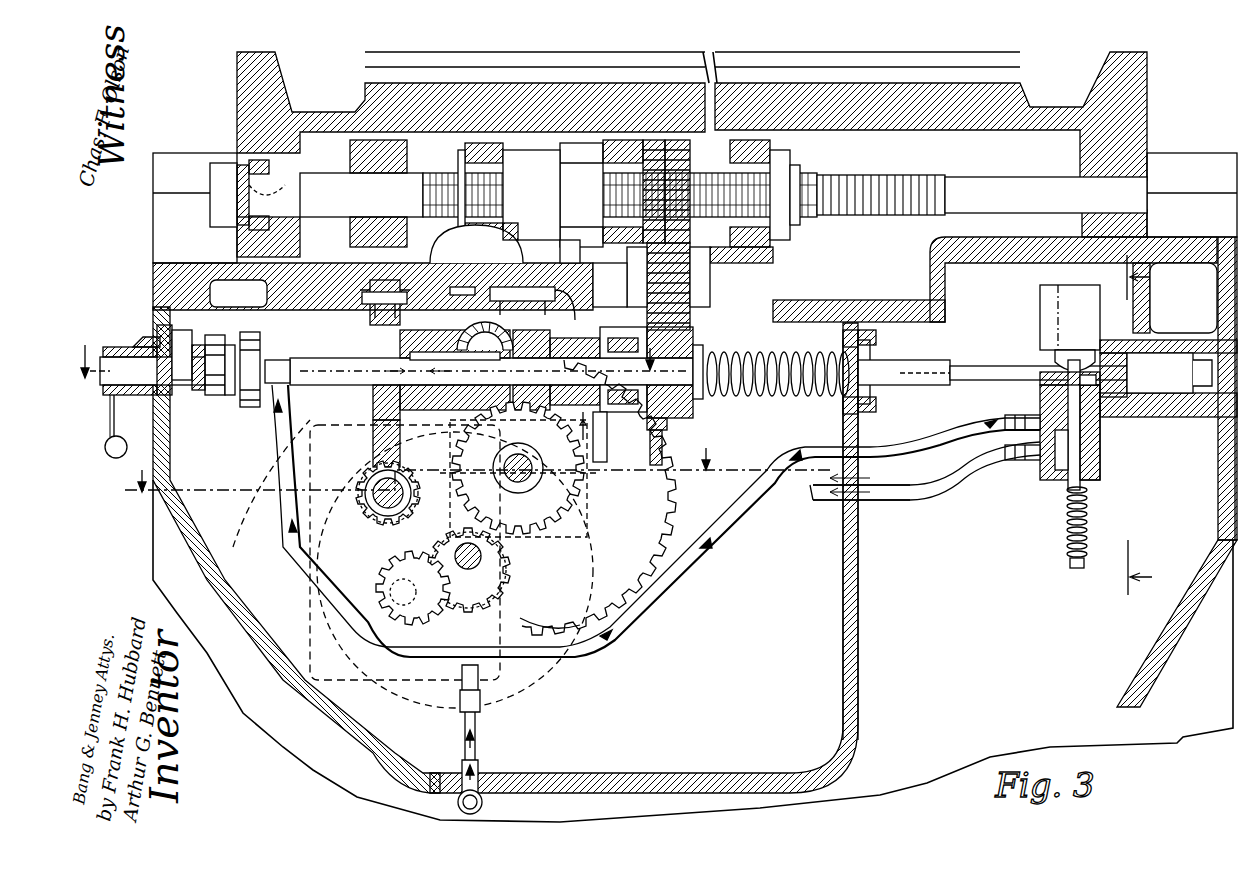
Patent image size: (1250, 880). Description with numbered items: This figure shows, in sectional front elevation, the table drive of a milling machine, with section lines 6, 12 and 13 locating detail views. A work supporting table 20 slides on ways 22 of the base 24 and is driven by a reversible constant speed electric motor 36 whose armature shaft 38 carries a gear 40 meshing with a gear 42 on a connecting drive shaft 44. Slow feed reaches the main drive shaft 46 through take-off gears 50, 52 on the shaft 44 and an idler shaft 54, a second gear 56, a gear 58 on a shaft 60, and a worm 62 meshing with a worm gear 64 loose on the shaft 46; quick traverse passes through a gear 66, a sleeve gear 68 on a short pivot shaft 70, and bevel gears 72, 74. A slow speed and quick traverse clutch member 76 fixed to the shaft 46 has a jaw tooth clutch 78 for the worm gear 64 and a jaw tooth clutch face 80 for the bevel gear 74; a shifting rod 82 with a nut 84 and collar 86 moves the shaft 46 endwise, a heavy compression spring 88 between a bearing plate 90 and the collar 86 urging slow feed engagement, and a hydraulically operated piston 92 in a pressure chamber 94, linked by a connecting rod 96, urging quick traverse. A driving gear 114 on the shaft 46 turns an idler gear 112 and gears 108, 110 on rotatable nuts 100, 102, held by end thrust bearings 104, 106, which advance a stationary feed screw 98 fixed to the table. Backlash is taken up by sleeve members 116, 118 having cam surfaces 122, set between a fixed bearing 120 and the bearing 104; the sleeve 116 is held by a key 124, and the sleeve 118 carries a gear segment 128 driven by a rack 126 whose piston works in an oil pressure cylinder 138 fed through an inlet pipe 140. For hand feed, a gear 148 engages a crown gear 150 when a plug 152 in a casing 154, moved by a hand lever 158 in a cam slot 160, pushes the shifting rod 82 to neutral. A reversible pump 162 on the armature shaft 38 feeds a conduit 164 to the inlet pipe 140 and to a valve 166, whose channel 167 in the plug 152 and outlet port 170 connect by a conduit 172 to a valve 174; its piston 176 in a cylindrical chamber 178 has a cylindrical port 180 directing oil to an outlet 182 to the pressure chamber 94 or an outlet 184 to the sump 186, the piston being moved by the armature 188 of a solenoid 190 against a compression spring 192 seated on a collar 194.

The section line 6 is at (405, 351).
The section line 12 is at (469, 470).
The section line 13 is at (1156, 425).
The work supporting table 20 is at (952, 56).
The ways 22 is at (1194, 160).
The base 24 is at (300, 765).
The reversible constant speed electric motor 36 is at (545, 700).
The armature shaft 38 is at (390, 594).
The gear 40 is at (410, 620).
The gear 42 is at (535, 628).
The connecting drive shaft 44 is at (505, 475).
The main drive shaft 46 is at (630, 360).
The take-off gear 50 is at (556, 535).
The take-off gear 52 is at (482, 553).
The idler shaft 54 is at (478, 582).
The second gear 56 is at (510, 575).
The gear 58 is at (372, 520).
The shaft 60 is at (365, 504).
The worm 62 is at (375, 476).
The worm gear 64 is at (368, 287).
The gear 66 is at (450, 457).
The sleeve gear 68 is at (518, 452).
The short pivot shaft 70 is at (491, 371).
The bevel gear 72 is at (483, 326).
The bevel gear 74 is at (535, 334).
The slow speed and quick traverse clutch member 76 is at (440, 340).
The jaw tooth clutch 78 is at (400, 428).
The jaw tooth clutch face 80 is at (525, 355).
The shifting rod 82 is at (908, 348).
The nut 84 is at (219, 356).
The collar 86 is at (693, 400).
The heavy compression spring 88 is at (810, 397).
The bearing plate 90 is at (868, 392).
The hydraulically operated piston 92 is at (1169, 373).
The pressure chamber 94 is at (1190, 340).
The connecting rod 96 is at (962, 372).
The stationary feed screw 98 is at (945, 193).
The rotatable nut 100 is at (460, 217).
The rotatable nut 102 is at (760, 200).
The end thrust bearing 104 is at (490, 140).
The end thrust bearing 106 is at (750, 143).
The gear 108 is at (658, 140).
The gear 110 is at (676, 140).
The idler gear 112 is at (690, 283).
The driving gear 114 is at (663, 422).
The sleeve member 116 is at (575, 143).
The sleeve member 118 is at (515, 150).
The fixed bearing 120 is at (612, 140).
The cam surfaces 122 is at (575, 200).
The key 124 is at (610, 285).
The rack 126 is at (475, 248).
The gear segment 128 is at (523, 233).
The oil pressure cylinder 138 is at (532, 303).
The inlet pipe 140 is at (465, 285).
The gear 148 is at (230, 400).
The crown gear 150 is at (248, 407).
The plug 152 is at (135, 347).
The casing 154 is at (148, 337).
The hand lever 158 is at (105, 445).
The cam slot 160 is at (110, 400).
The reversible pump 162 is at (405, 569).
The conduit 164 is at (525, 508).
The valve 166 is at (182, 345).
The channel 167 is at (155, 371).
The outlet port 170 is at (200, 395).
The conduit 172 is at (962, 430).
The valve 174 is at (1045, 475).
The piston 176 is at (1040, 412).
The cylindrical chamber 178 is at (1040, 392).
The cylindrical port 180 is at (1098, 448).
The outlet 182 is at (1106, 437).
The outlet 184 is at (915, 500).
The sump 186 is at (858, 590).
The armature 188 is at (1055, 356).
The solenoid 190 is at (1040, 312).
The compression spring 192 is at (1067, 510).
The collar 194 is at (1067, 563).